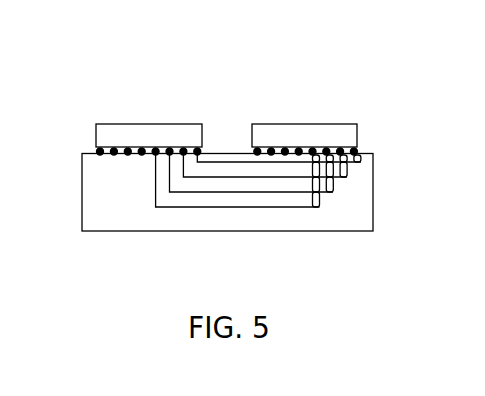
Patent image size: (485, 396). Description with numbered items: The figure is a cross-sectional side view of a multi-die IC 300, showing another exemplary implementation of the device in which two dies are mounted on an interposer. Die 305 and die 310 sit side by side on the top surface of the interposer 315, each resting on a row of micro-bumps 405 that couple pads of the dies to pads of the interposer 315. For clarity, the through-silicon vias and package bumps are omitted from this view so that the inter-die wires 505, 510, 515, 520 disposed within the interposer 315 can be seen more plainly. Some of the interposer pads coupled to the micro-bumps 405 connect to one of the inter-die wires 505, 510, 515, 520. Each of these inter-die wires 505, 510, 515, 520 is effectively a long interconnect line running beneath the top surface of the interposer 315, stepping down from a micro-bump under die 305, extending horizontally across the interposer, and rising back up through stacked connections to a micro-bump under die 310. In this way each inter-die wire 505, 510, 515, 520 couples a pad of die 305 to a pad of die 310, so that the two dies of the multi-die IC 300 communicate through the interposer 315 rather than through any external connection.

The multi-die IC 300 is at (241, 90).
The die 305 is at (149, 135).
The die 310 is at (304, 135).
The interposer 315 is at (112, 200).
The micro-bumps 405 is at (95, 152).
The inter-die wire 505 is at (345, 160).
The inter-die wire 510 is at (331, 176).
The inter-die wire 515 is at (318, 194).
The inter-die wire 520 is at (258, 209).